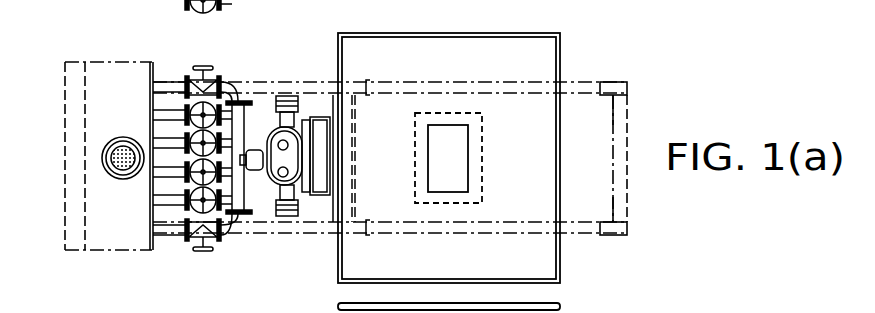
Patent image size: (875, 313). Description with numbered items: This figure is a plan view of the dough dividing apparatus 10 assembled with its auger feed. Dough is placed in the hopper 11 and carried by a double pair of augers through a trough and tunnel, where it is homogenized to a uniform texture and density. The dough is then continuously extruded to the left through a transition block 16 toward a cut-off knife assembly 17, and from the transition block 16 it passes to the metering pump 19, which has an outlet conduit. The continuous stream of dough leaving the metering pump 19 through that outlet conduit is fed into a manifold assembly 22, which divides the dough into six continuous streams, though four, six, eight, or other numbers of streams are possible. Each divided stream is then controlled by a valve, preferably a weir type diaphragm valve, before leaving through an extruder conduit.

The dough dividing apparatus 10 is at (587, 75).
The hopper 11 is at (538, 255).
The transition block 16 is at (322, 118).
The cut-off knife assembly 17 is at (132, 76).
The metering pump 19 is at (278, 178).
The manifold assembly 22 is at (224, 68).